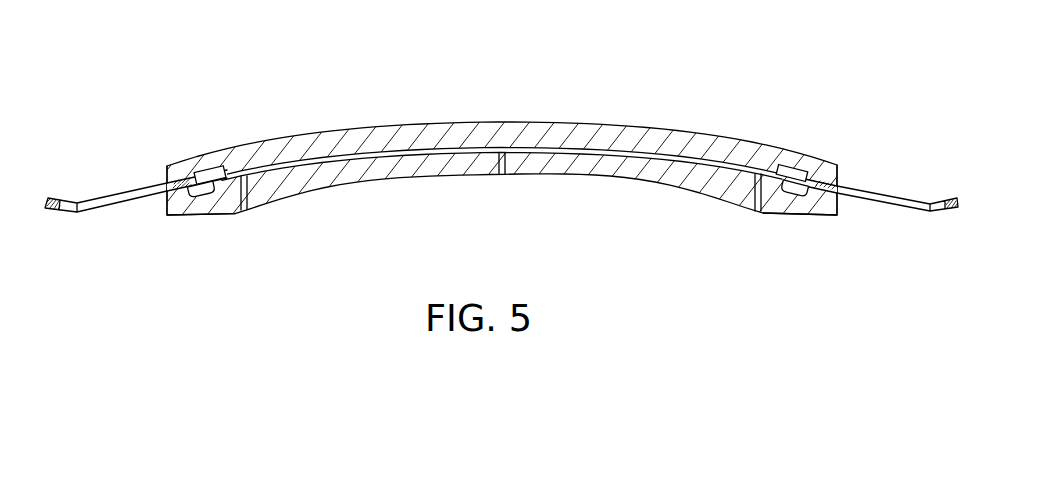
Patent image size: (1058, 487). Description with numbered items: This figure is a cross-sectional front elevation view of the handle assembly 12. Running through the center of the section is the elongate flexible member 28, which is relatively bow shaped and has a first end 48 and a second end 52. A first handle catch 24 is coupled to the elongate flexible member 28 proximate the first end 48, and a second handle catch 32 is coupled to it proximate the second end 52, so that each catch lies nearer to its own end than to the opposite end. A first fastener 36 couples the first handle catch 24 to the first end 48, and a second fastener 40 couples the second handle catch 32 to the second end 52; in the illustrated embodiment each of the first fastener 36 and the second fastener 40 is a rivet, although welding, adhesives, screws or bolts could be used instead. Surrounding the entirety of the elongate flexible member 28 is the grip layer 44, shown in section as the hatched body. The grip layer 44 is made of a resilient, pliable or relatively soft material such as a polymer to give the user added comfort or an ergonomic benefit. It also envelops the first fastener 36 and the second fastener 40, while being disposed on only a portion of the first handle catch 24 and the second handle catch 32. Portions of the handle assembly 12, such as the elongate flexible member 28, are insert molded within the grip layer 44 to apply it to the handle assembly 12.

The handle assembly 12 is at (501, 165).
The first handle catch 24 is at (102, 195).
The elongate flexible member 28 is at (330, 168).
The second handle catch 32 is at (895, 197).
The first fastener 36 is at (212, 170).
The second fastener 40 is at (795, 172).
The grip layer 44 is at (390, 140).
The first end 48 is at (153, 223).
The second end 52 is at (851, 223).